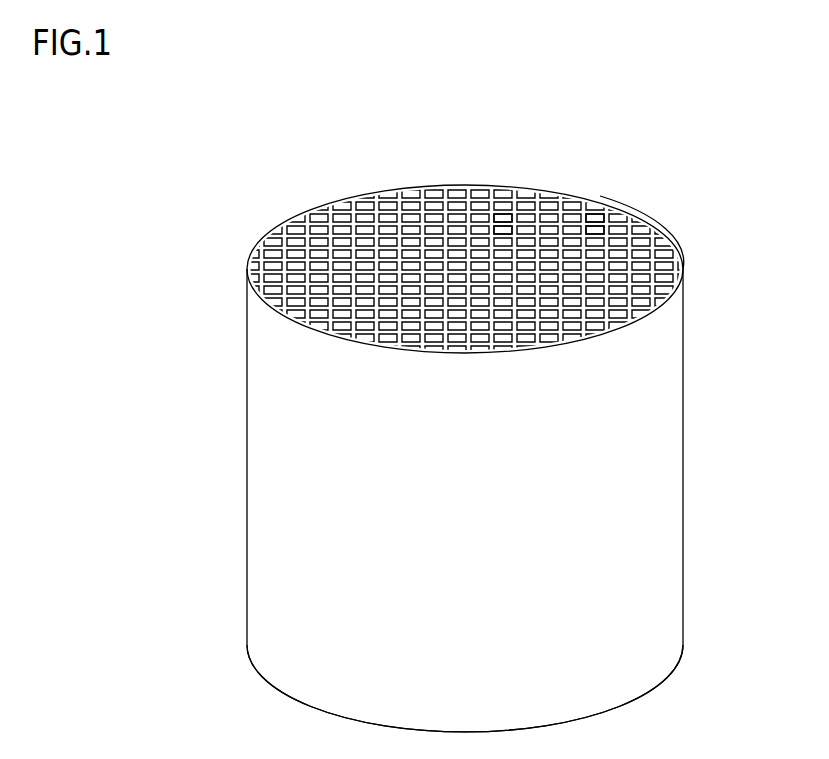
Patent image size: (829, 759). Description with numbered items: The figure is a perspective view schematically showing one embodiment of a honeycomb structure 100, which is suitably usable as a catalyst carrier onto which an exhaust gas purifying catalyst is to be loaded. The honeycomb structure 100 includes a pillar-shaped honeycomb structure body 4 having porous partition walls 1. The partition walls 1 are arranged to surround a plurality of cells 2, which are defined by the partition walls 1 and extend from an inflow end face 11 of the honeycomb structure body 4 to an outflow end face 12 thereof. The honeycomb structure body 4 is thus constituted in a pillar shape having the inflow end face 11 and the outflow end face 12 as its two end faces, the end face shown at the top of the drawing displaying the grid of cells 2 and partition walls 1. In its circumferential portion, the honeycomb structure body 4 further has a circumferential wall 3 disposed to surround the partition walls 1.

The honeycomb structure 100 is at (762, 101).
The partition walls 1 is at (490, 222).
The cells 2 is at (433, 220).
The circumferential wall 3 is at (593, 208).
The honeycomb structure body 4 is at (640, 212).
The inflow end face 11 is at (284, 212).
The outflow end face 12 is at (252, 679).